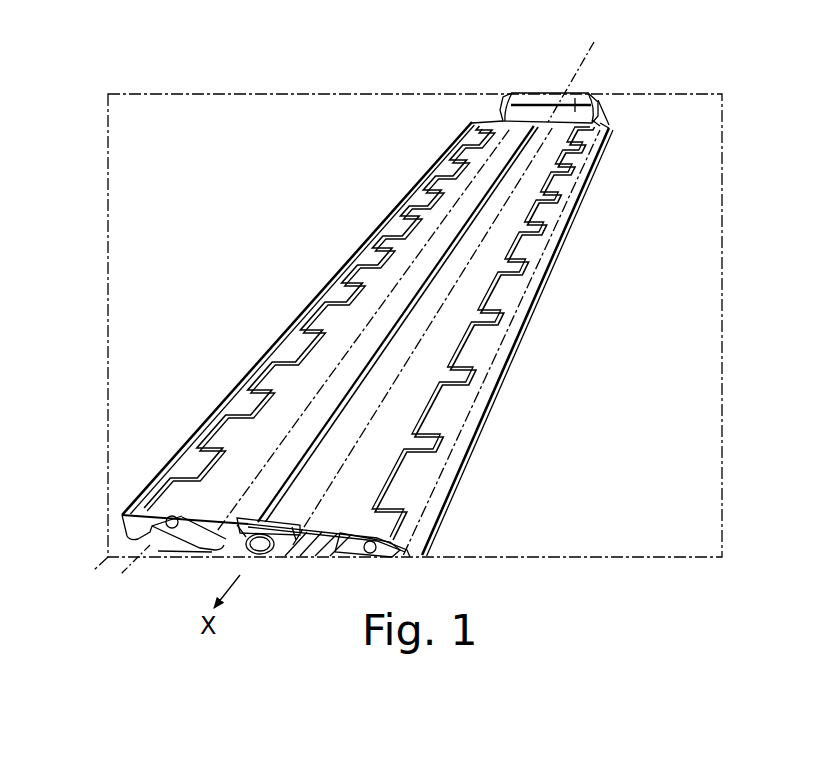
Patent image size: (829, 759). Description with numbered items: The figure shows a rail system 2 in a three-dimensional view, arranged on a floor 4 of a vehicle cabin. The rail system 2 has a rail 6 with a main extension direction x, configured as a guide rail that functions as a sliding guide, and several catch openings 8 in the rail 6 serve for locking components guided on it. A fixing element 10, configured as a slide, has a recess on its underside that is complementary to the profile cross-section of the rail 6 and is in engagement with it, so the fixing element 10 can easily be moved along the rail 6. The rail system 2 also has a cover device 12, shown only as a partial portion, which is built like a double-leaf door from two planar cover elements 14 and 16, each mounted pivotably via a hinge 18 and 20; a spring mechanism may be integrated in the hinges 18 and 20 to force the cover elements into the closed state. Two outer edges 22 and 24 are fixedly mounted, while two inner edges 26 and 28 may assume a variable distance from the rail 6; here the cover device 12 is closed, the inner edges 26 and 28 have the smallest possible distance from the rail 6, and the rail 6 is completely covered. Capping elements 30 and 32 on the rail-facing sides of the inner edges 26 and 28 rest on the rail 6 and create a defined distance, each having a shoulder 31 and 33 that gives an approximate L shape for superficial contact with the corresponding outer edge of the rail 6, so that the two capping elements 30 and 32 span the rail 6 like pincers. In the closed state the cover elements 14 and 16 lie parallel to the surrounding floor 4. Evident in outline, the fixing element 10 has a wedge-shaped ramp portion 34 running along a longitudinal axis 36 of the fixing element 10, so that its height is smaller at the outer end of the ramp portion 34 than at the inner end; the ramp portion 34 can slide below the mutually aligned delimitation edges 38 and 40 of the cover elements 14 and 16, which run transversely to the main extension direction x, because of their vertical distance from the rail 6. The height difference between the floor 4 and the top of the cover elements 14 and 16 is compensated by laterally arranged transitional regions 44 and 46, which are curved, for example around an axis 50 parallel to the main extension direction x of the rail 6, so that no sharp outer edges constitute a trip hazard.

The rail system 2 is at (386, 86).
The floor 4 is at (709, 217).
The rail 6 is at (290, 552).
The catch openings 8 is at (264, 554).
The fixing element 10 is at (606, 96).
The cover device 12 is at (312, 336).
The cover element 14 is at (319, 318).
The cover element 16 is at (519, 339).
The hinge 18 is at (250, 378).
The hinge 20 is at (455, 415).
The outer edge 22 is at (183, 470).
The outer edge 24 is at (402, 507).
The inner edge 26 is at (420, 282).
The inner edge 28 is at (456, 270).
The capping element 30 is at (259, 522).
The shoulder 31 is at (247, 520).
The capping element 32 is at (294, 521).
The shoulder 33 is at (335, 507).
The ramp portion 34 is at (577, 105).
The longitudinal axis 36 is at (580, 66).
The delimitation edge 38 is at (515, 100).
The delimitation edge 40 is at (594, 121).
The transitional region 44 is at (367, 260).
The transitional region 46 is at (560, 196).
The axis 50 is at (108, 566).